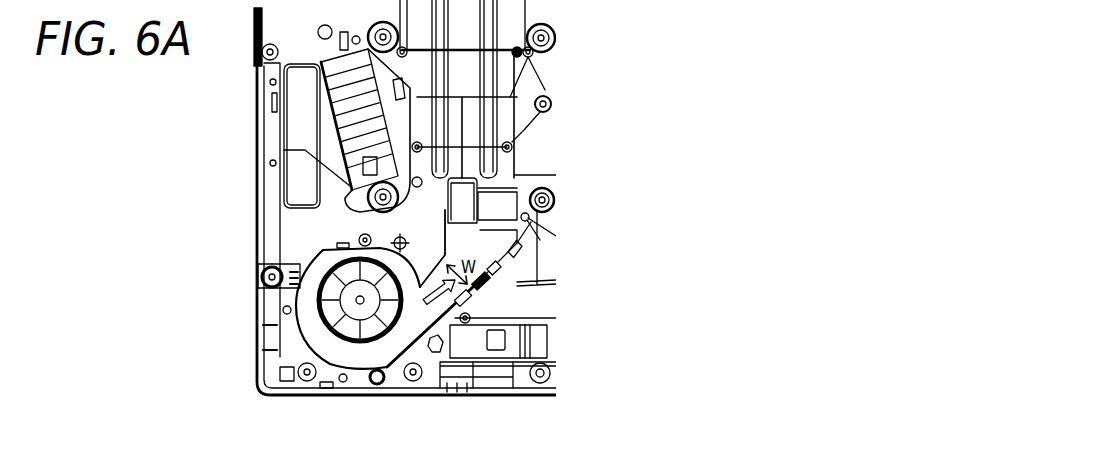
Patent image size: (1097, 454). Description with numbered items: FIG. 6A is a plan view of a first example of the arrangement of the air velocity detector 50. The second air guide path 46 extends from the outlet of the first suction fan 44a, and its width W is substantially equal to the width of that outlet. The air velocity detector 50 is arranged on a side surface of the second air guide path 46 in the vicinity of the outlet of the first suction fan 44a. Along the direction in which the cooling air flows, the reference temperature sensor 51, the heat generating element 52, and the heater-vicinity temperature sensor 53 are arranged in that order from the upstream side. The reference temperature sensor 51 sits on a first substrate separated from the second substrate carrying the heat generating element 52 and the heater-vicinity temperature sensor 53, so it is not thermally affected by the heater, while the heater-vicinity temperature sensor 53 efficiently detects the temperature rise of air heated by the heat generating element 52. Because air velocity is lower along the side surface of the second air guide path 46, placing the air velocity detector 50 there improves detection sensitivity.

The second air guide path 46 is at (470, 245).
The first suction fan 44a is at (330, 343).
The air velocity detector 50 is at (668, 318).
The reference temperature sensor 51 is at (468, 300).
The heat generating element 52 is at (488, 284).
The heater-vicinity temperature sensor 53 is at (497, 280).